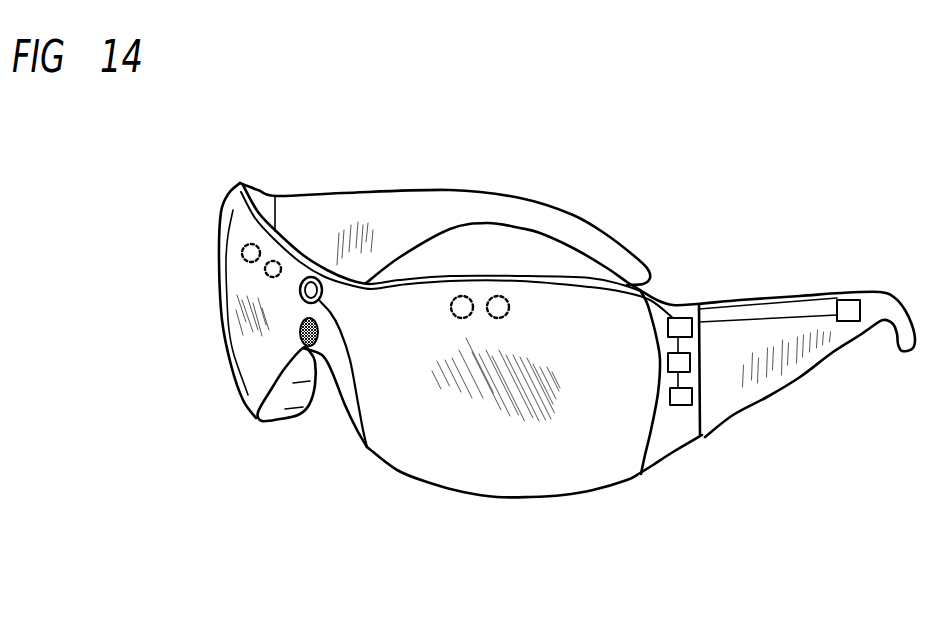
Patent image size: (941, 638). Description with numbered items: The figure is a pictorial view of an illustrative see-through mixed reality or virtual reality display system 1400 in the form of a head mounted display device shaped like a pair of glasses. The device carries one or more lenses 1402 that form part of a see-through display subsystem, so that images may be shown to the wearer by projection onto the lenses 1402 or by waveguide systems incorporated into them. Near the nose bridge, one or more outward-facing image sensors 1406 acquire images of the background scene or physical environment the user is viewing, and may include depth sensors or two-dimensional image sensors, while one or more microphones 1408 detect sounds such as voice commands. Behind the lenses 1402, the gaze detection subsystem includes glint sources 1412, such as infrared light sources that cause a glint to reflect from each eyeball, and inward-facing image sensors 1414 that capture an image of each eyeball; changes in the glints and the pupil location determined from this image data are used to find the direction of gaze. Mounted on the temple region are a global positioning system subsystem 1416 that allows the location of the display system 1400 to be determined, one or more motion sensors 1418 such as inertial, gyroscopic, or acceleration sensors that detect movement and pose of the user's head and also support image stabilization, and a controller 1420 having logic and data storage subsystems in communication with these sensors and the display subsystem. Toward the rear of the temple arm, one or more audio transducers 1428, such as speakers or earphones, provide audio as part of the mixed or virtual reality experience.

The display system 1400 is at (540, 130).
The lenses 1402 is at (563, 465).
The outward-facing image sensors 1406 is at (364, 438).
The microphones 1408 is at (302, 343).
The glint sources 1412 is at (268, 276).
The image sensors 1414 is at (246, 246).
The global positioning system (GPS) subsystem 1416 is at (668, 360).
The motion sensors 1418 is at (670, 395).
The controller 1420 is at (668, 324).
The audio transducers 1428 is at (841, 300).